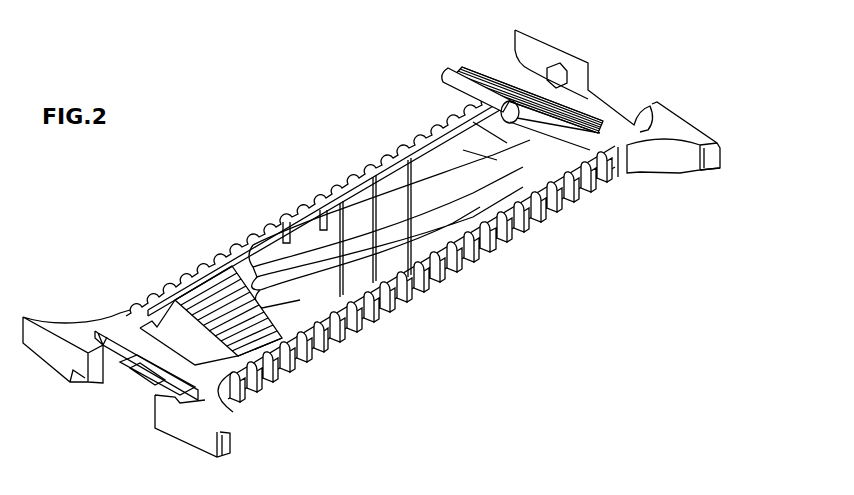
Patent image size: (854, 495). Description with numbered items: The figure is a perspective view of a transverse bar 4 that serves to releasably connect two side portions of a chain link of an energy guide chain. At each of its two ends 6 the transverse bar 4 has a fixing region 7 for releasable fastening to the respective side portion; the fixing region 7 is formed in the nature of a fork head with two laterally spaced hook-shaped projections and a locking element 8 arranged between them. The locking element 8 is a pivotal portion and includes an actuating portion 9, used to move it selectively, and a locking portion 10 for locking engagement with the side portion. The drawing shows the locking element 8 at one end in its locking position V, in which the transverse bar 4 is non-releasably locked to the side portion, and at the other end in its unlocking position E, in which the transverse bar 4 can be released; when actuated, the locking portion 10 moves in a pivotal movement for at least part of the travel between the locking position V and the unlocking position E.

The transverse bar 4 is at (477, 326).
The end 6 is at (252, 455).
The fixing region 7 is at (86, 410).
The locking element 8 is at (182, 327).
The actuating portion 9 is at (226, 288).
The locking portion 10 is at (147, 400).
The locking position V is at (136, 243).
The unlocking position E is at (405, 61).